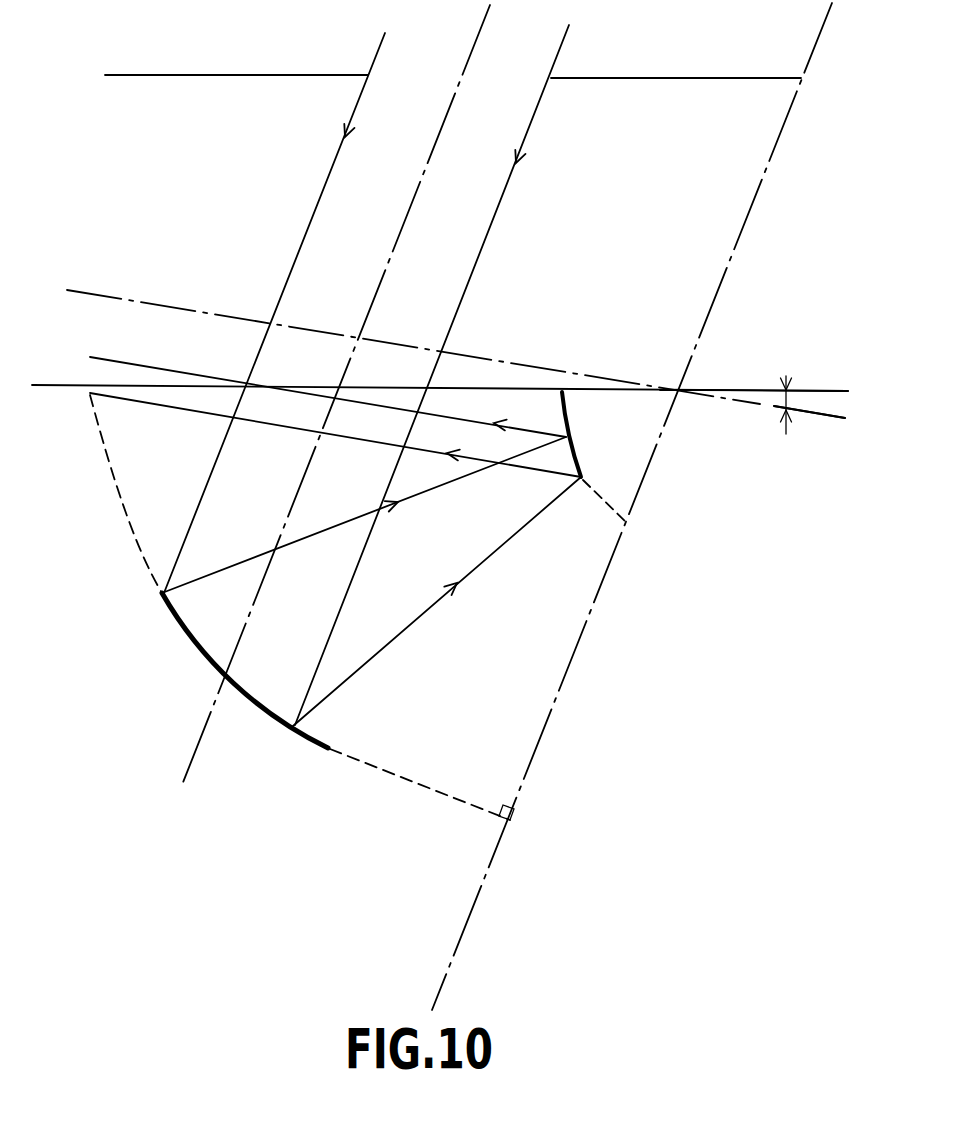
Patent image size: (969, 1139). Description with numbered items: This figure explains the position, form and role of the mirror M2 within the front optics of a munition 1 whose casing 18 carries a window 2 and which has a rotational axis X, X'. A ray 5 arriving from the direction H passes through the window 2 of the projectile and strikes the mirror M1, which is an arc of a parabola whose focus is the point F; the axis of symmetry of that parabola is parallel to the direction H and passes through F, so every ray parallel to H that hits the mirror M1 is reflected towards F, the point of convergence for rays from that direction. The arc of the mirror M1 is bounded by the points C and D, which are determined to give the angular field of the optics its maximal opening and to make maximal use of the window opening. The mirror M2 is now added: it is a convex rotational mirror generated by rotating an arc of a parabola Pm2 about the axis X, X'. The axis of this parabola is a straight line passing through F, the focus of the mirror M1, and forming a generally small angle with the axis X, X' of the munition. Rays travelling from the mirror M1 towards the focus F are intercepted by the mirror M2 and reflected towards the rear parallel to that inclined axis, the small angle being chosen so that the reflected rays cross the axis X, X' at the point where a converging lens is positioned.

The munition 1 is at (185, 92).
The casing 18 is at (255, 77).
The window 2 is at (534, 82).
The ray 5 is at (307, 239).
The direction of incoming rays H is at (466, 77).
The rotational axis end point X is at (440, 374).
The rotational axis end point X' is at (791, 386).
The focus F is at (691, 383).
The mirror M1 is at (220, 673).
The mirror M2 is at (584, 482).
The limit point of mirror arc C is at (139, 599).
The limit point of mirror arc D is at (328, 768).
The parabola Pm2 is at (616, 513).